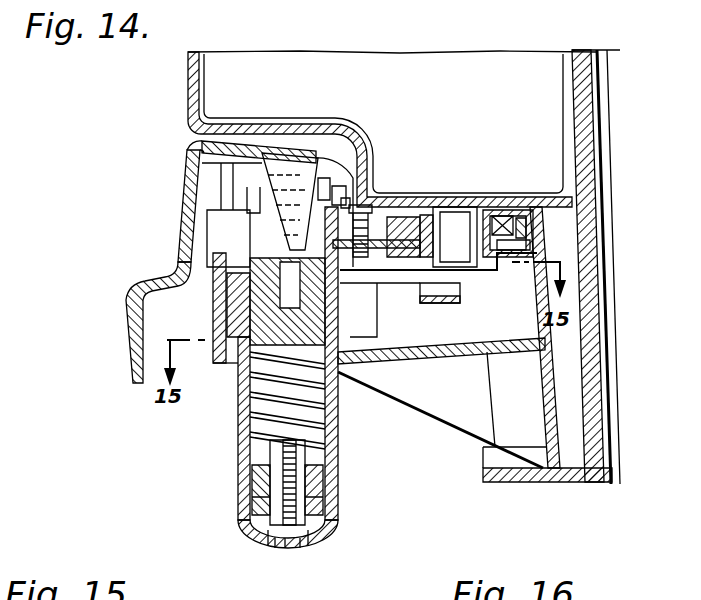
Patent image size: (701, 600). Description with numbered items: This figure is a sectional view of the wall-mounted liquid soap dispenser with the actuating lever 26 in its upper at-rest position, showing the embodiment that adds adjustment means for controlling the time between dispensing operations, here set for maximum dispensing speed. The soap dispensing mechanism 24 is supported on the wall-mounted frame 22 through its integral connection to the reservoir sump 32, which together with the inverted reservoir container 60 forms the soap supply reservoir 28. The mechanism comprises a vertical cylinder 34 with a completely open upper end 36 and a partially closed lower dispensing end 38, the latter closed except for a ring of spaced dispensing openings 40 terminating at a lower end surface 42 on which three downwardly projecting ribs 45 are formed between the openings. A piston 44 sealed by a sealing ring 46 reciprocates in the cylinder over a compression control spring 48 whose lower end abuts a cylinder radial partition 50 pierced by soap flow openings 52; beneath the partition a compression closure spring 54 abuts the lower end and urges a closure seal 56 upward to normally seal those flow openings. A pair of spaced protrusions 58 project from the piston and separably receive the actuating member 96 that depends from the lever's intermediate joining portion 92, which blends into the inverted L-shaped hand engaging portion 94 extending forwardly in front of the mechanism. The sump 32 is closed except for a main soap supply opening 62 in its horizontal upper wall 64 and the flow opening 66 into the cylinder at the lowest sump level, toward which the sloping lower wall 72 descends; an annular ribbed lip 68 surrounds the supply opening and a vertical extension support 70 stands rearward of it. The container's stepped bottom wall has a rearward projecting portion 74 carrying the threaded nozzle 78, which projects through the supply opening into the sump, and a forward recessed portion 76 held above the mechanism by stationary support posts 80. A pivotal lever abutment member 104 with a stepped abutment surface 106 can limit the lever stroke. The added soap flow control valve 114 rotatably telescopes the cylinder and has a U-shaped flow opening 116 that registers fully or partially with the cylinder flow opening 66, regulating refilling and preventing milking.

The wall-mounted frame 22 is at (584, 48).
The soap dispensing mechanism 24 is at (236, 427).
The actuating lever 26 is at (180, 165).
The soap supply reservoir 28 is at (388, 46).
The reservoir sump 32 is at (523, 262).
The cylinder 34 is at (338, 424).
The open upper end 36 is at (262, 203).
The lower dispensing end 38 is at (247, 537).
The dispensing openings 40 is at (268, 550).
The lower end surface 42 is at (325, 540).
The piston 44 is at (250, 323).
The ribs 45 is at (285, 548).
The sealing ring 46 is at (222, 276).
The compression control spring 48 is at (258, 378).
The cylinder radial partition 50 is at (252, 486).
The soap flow openings 52 is at (318, 470).
The compression closure spring 54 is at (333, 506).
The closure seal 56 is at (252, 497).
The protrusions 58 is at (255, 195).
The reservoir container 60 is at (470, 86).
The main soap supply opening 62 is at (505, 250).
The upper wall 64 is at (503, 240).
The flow opening 66 is at (350, 362).
The ribbed lip 68 is at (540, 223).
The extension support 70 is at (536, 197).
The lower wall 72 is at (488, 372).
The rearward projecting portion 74 is at (512, 198).
The forward recessed portion 76 is at (312, 124).
The threaded nozzle 78 is at (473, 198).
The support posts 80 is at (205, 150).
The intermediate joining portion 92 is at (263, 160).
The hand engaging portion 94 is at (140, 265).
The actuating member 96 is at (338, 128).
The lever abutment member 104 is at (362, 192).
The stepped abutment surface 106 is at (362, 156).
The soap flow control valve 114 is at (445, 303).
The U-shaped flow opening 116 is at (357, 337).